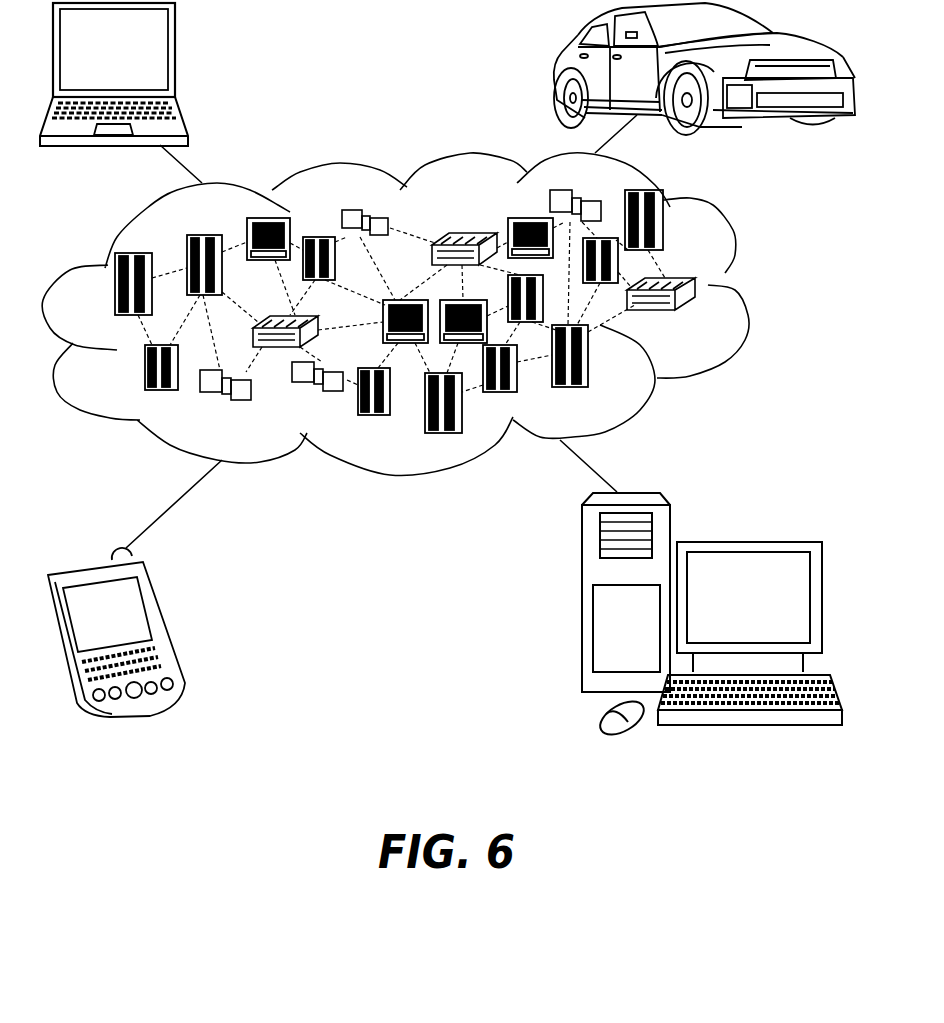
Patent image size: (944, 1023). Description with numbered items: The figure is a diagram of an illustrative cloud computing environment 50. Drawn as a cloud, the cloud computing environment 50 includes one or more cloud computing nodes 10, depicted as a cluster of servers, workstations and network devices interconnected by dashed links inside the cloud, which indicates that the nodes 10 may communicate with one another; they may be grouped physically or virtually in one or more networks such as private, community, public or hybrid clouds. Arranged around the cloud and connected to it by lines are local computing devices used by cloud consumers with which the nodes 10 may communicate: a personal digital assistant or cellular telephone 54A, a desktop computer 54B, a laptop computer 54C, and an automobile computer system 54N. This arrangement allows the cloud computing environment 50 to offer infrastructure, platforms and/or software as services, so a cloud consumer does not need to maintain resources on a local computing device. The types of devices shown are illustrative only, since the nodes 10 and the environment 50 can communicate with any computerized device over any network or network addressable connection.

The cloud computing nodes 10 is at (705, 322).
The cloud computing environment 50 is at (752, 292).
The personal digital assistant (PDA) or cellular telephone 54A is at (165, 623).
The desktop computer 54B is at (745, 542).
The laptop computer 54C is at (176, 56).
The automobile computer system 54N is at (557, 70).